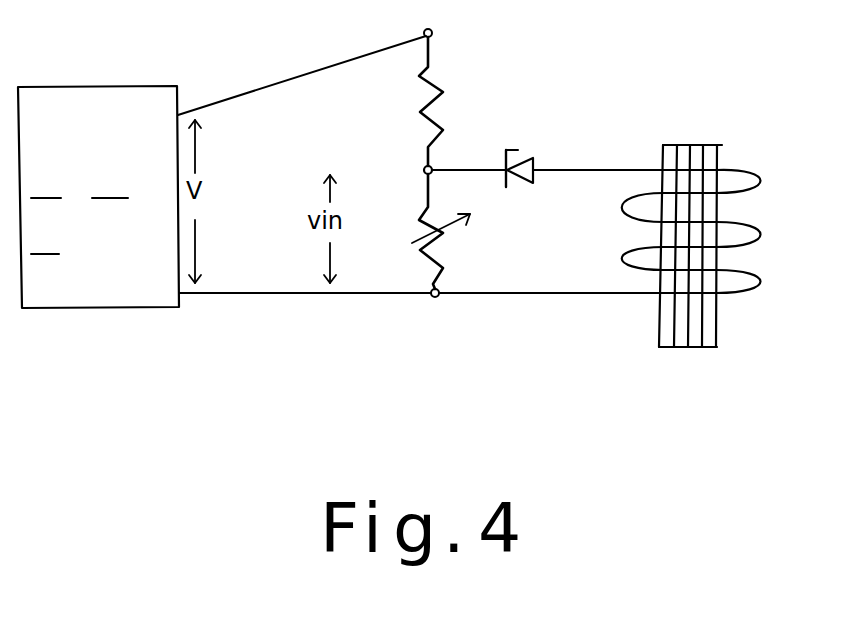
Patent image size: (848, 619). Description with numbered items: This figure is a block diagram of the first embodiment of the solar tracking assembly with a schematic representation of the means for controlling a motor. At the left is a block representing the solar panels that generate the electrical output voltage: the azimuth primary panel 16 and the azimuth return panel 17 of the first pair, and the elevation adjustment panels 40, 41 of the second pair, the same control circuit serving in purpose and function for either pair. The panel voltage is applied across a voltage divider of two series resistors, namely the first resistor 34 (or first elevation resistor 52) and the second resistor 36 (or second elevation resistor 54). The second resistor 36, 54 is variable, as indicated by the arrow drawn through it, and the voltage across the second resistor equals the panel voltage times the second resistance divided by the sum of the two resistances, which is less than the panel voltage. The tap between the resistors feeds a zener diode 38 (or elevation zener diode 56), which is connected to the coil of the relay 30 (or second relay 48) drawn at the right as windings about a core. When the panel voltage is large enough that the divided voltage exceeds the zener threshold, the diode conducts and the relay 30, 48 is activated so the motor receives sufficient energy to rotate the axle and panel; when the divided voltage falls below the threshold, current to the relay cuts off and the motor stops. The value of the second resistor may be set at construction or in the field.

The azimuth panel 16 is at (98, 197).
The elevation adjustment panel 40 is at (98, 197).
The azimuth return panel 17 is at (98, 197).
The elevation adjustment panel 41 is at (98, 197).
The first resistor 34 is at (468, 96).
The first elevation resistor 52 is at (449, 97).
The second resistor 36 is at (469, 235).
The second elevation resistor 54 is at (518, 257).
The zener diode 38 is at (570, 131).
The elevation zener diode 56 is at (582, 118).
The relay 30 is at (723, 213).
The second relay 48 is at (768, 115).